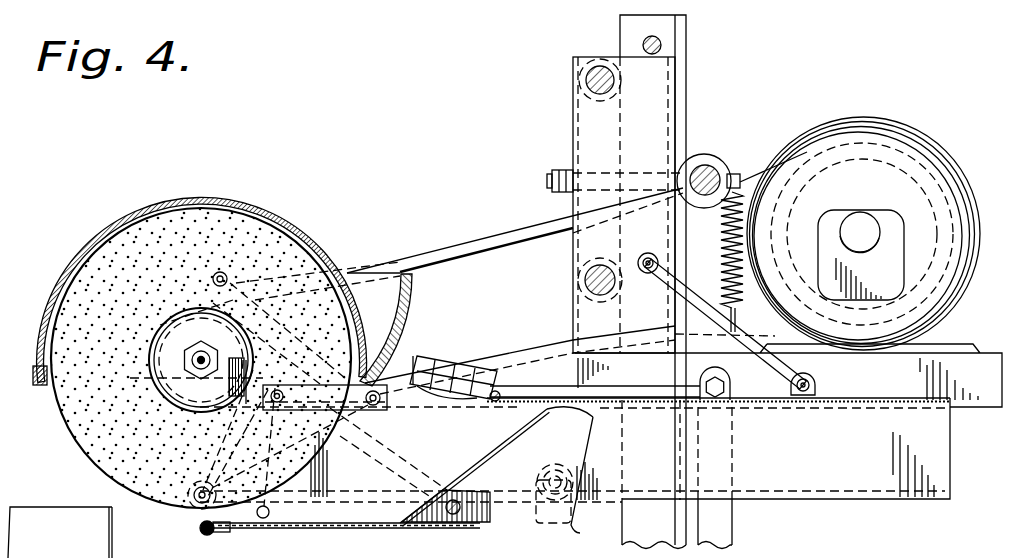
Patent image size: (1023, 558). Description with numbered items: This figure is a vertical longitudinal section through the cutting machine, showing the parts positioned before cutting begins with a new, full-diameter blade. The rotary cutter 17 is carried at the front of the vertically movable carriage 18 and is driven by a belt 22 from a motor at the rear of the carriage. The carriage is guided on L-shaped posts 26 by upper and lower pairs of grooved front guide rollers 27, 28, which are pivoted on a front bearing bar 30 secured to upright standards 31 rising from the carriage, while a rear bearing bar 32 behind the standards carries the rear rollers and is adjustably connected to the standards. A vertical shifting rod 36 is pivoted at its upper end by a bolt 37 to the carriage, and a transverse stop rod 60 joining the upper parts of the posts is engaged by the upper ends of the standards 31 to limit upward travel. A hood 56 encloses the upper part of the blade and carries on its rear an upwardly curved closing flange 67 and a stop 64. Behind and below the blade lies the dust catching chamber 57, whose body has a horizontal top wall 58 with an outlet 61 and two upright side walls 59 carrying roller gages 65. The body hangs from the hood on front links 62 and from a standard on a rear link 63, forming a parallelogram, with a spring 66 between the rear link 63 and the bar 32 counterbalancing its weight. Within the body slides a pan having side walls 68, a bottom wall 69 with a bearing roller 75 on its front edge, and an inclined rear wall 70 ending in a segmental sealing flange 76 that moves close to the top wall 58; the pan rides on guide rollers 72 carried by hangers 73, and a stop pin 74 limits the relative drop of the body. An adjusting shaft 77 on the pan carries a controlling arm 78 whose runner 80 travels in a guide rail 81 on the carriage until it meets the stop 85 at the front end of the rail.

The rotary cutter 17 is at (98, 466).
The carriage 18 is at (788, 375).
The belt 22 is at (474, 244).
The posts 26 is at (653, 282).
The upper pair of front guide rollers 27 is at (858, 128).
The lower pair of front guide rollers 28 is at (580, 302).
The front bearing bar 30 is at (586, 80).
The standards 31 is at (613, 205).
The rear bearing bar 32 is at (707, 164).
The vertical shifting rod 36 is at (733, 524).
The bolt 37 is at (714, 402).
The hood 56 is at (128, 224).
The dust catching chamber 57 is at (331, 464).
The top wall 58 is at (910, 390).
The side walls 59 is at (950, 466).
The stop rod 60 is at (661, 43).
The outlet 61 is at (470, 378).
The front links 62 is at (229, 279).
The rear link 63 is at (776, 366).
The stop 64 is at (387, 388).
The gage 65 is at (190, 498).
The spring 66 is at (724, 247).
The closing flange 67 is at (412, 300).
The pan side walls 68 is at (386, 467).
The bottom wall 69 is at (306, 529).
The inclined rear wall 70 is at (492, 450).
The guide rollers 72 is at (574, 478).
The hangers 73 is at (575, 526).
The stop pin 74 is at (265, 519).
The bearing roller 75 is at (203, 533).
The sealing flange 76 is at (592, 421).
The adjusting shaft 77 is at (450, 522).
The controlling arm 78 is at (388, 449).
The runner 80 is at (276, 390).
The guide rail 81 is at (612, 394).
The stop 85 is at (230, 387).